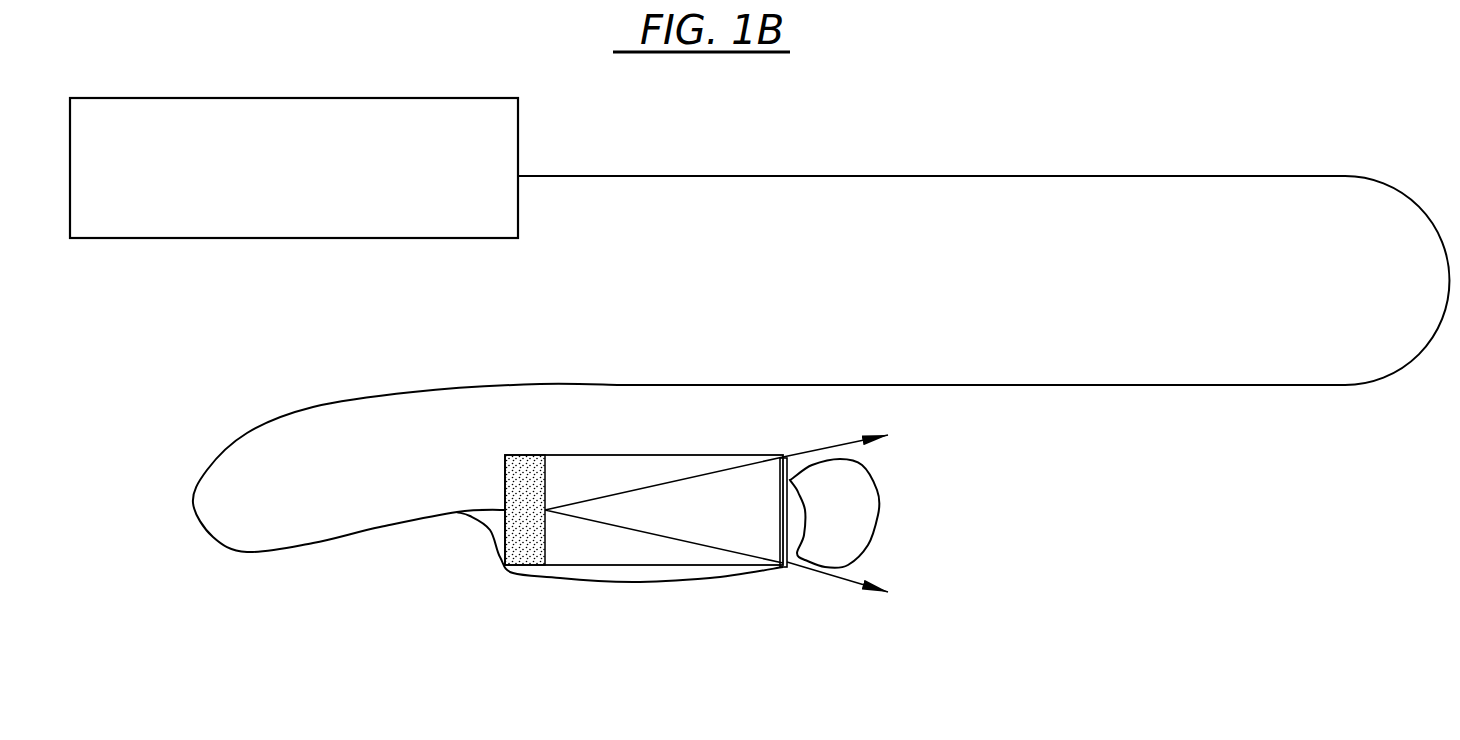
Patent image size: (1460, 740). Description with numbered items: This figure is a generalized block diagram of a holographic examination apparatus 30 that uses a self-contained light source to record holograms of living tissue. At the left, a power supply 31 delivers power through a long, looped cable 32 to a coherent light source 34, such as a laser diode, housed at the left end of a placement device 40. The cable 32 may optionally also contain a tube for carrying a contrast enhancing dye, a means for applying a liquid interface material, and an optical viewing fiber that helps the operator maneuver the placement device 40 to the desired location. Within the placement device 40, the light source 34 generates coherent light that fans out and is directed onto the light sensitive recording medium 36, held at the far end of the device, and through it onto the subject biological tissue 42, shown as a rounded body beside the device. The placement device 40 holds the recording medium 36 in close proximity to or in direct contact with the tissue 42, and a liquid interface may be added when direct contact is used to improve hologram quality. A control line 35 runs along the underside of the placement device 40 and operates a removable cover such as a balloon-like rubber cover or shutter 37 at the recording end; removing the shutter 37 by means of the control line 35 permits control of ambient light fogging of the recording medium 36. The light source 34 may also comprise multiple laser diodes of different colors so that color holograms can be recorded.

The holographic examination apparatus 30 is at (887, 297).
The power supply 31 is at (427, 98).
The cable 32 is at (978, 176).
The coherent light source 34 is at (505, 478).
The control line 35 is at (607, 582).
The light sensitive recording medium 36 is at (780, 487).
The shutter 37 is at (787, 557).
The placement device 40 is at (667, 455).
The subject biological tissue 42 is at (877, 492).